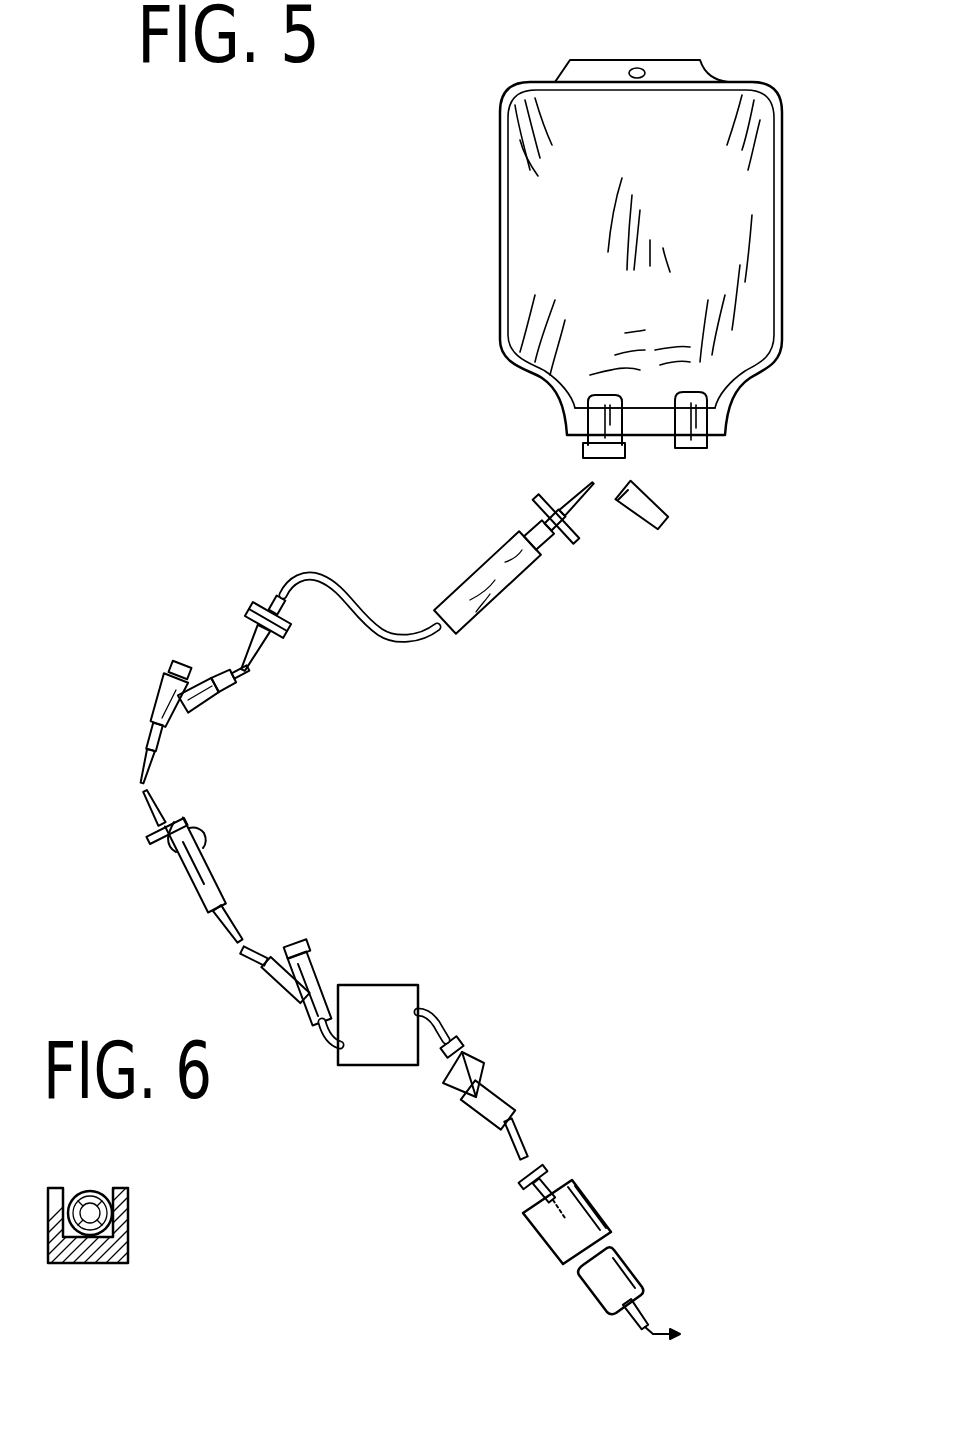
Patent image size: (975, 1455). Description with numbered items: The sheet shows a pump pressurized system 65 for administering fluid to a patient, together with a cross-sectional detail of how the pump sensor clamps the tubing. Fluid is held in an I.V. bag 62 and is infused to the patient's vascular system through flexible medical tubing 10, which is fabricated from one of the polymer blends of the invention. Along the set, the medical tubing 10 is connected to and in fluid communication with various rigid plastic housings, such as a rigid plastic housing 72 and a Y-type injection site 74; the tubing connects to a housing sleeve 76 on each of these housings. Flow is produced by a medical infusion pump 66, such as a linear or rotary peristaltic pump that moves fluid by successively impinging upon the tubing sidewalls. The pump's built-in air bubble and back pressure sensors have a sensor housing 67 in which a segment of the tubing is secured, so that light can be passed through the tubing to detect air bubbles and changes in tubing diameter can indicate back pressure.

In FIG. 5, the pump pressurized system 65 is at (308, 206).
In FIG. 5, the I.V. bag 62 is at (500, 235).
In FIG. 5, the rigid plastic housing 72 is at (554, 562).
In FIG. 5, the housing sleeve 76 is at (520, 543).
In FIG. 5, the medical tubing 10 is at (400, 643).
In FIG. 6, the medical tubing 10 is at (82, 1188).
In FIG. 5, the Y-type injection site 74 is at (160, 697).
In FIG. 5, the medical infusion pump 66 is at (412, 985).
In FIG. 6, the sensor housing 67 is at (128, 1213).